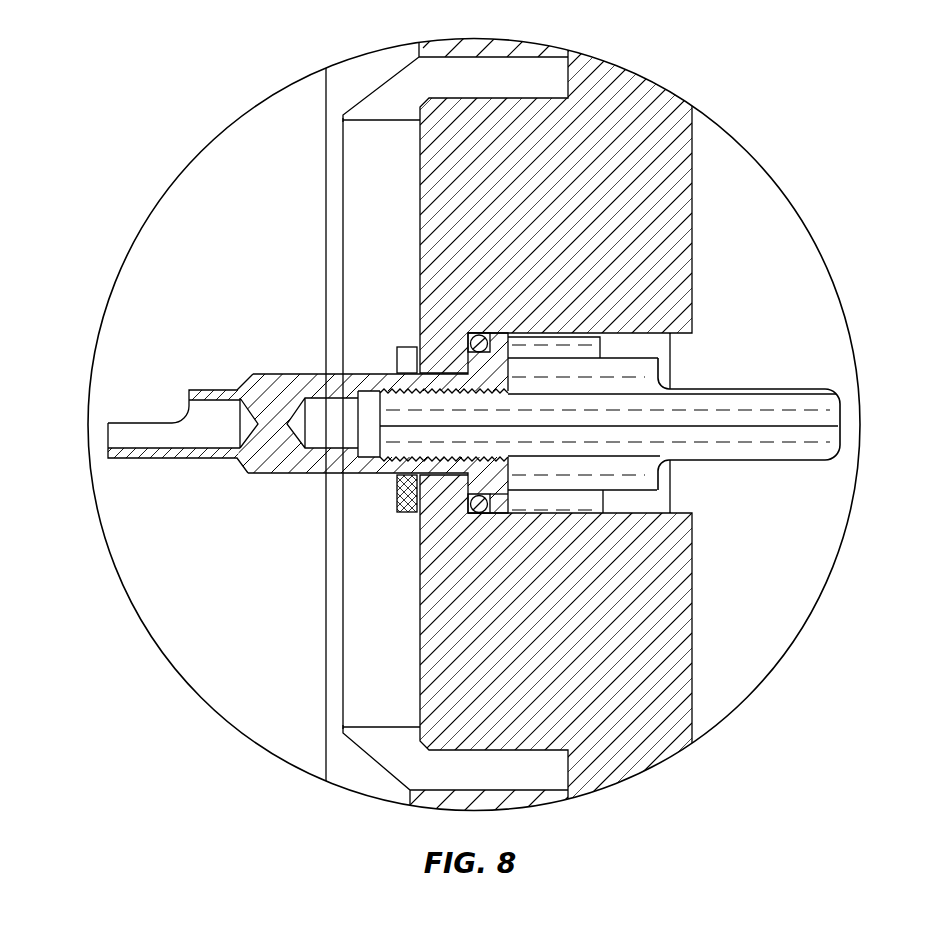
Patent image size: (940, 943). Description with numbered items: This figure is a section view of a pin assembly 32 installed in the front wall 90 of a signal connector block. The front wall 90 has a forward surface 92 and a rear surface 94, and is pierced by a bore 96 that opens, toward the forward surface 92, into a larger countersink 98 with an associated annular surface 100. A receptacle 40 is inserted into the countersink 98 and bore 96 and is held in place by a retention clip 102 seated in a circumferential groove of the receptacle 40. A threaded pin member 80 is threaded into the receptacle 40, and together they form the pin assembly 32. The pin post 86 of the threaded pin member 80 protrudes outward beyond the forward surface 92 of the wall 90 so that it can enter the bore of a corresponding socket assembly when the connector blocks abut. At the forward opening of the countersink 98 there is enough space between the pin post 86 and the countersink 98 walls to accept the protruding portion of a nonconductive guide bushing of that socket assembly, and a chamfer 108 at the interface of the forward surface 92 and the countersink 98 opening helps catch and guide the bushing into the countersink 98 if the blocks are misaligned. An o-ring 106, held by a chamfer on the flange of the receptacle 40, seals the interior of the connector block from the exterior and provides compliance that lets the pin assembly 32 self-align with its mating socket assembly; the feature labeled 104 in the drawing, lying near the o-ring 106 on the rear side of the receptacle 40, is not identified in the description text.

The pin assembly 32 is at (698, 363).
The receptacle 40 is at (248, 472).
The threaded pin member 80 is at (663, 412).
The pin post 86 is at (773, 460).
The front wall 90 is at (633, 120).
The forward surface 92 is at (693, 192).
The rear surface 94 is at (420, 215).
The bore 96 is at (443, 370).
The countersink 98 is at (625, 328).
The annular surface 100 is at (470, 362).
The retention clip 102 is at (406, 500).
The retaining ring 104 is at (481, 503).
The o-ring 106 is at (477, 508).
The chamfer 108 is at (680, 329).